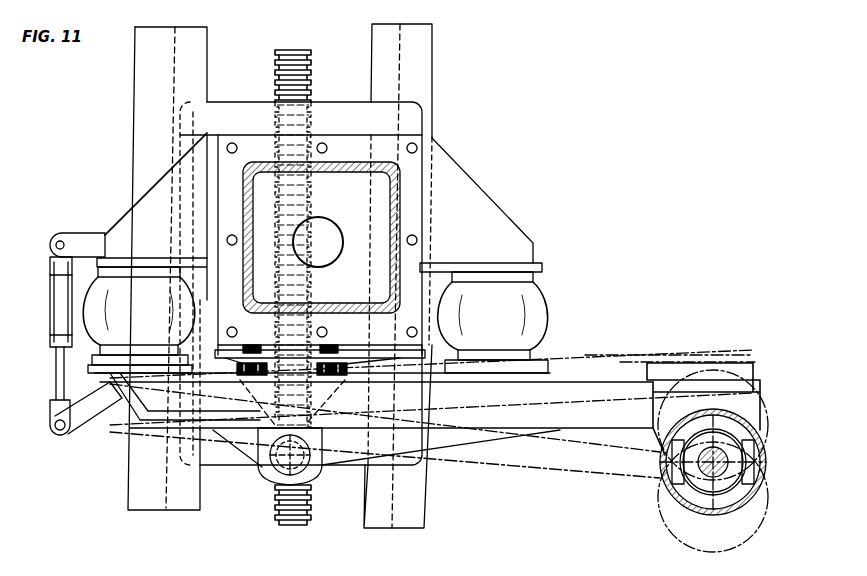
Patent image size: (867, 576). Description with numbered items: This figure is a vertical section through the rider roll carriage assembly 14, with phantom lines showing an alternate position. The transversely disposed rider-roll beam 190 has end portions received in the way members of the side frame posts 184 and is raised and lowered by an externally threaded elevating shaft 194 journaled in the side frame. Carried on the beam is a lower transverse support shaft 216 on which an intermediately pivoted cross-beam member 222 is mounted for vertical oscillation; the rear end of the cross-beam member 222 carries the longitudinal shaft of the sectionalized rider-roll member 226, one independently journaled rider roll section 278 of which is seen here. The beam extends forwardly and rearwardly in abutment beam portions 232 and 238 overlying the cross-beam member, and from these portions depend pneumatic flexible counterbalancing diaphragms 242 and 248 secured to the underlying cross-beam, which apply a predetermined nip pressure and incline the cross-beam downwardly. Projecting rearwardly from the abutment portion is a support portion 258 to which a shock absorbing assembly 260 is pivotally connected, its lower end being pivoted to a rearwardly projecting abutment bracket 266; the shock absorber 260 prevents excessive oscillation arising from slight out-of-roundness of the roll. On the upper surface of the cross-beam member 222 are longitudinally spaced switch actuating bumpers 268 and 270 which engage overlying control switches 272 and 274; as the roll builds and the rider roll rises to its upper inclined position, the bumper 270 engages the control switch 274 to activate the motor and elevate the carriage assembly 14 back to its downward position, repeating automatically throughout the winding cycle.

The rider roll carriage assembly 14 is at (499, 198).
The upright post 184 is at (197, 66).
The rider-roll beam 190 is at (400, 183).
The externally threaded elevating shaft 194 is at (312, 66).
The lower transverse support shaft 216 is at (265, 470).
The cross-beam member 222 is at (508, 412).
The rider-roll member 226 is at (745, 375).
The abutment beam portion 232 is at (518, 245).
The abutment beam portion 238 is at (150, 190).
The pneumatic counterbalancing diaphragm 242 is at (545, 320).
The pneumatic counterbalancing diaphragm 248 is at (56, 370).
The support portion 258 is at (80, 240).
The shock absorbing assembly 260 is at (51, 319).
The abutment bracket 266 is at (105, 418).
The switch actuating bumper 268 is at (256, 380).
The switch actuating bumper 270 is at (331, 380).
The control switch 272 is at (258, 350).
The control switch 274 is at (337, 350).
The rider roll section 278 is at (693, 512).